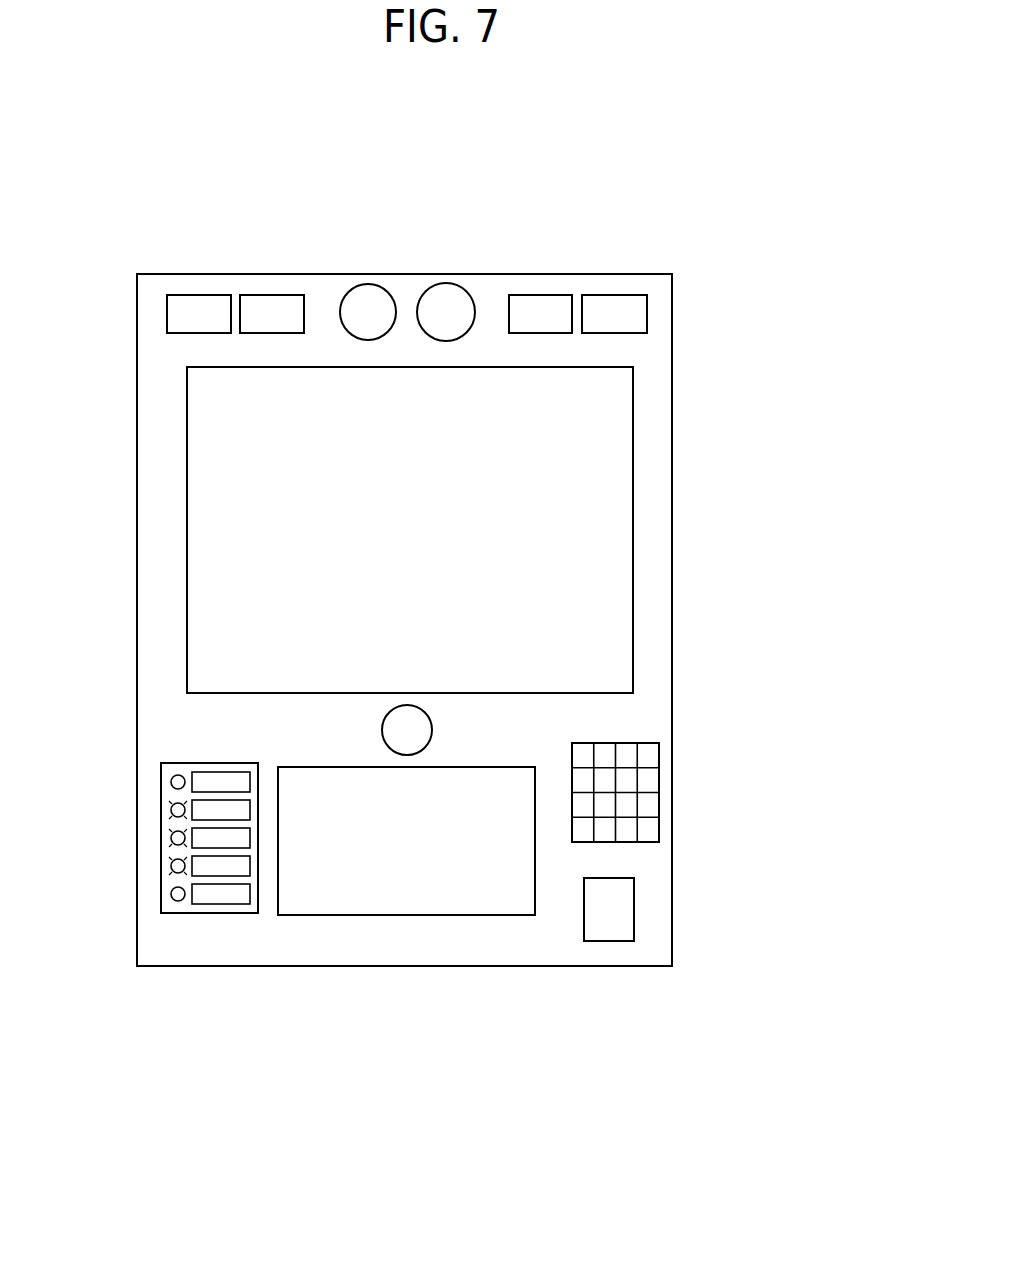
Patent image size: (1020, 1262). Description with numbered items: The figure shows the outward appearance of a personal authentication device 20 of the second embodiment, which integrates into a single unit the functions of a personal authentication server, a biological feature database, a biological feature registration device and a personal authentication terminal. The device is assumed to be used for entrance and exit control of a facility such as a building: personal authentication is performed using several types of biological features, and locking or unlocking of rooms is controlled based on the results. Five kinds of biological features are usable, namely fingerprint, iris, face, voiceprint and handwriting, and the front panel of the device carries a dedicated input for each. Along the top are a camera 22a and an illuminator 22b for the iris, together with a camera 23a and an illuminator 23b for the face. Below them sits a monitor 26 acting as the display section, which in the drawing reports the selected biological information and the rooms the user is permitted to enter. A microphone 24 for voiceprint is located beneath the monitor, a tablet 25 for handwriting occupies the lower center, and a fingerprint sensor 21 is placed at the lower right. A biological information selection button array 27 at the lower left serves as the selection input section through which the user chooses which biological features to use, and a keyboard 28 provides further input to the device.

The personal authentication device 20 is at (135, 272).
The fingerprint sensor 21 is at (634, 908).
The camera for iris 22a is at (446, 283).
The illuminator for iris 22b is at (198, 295).
The camera for face 23a is at (368, 284).
The illuminator for face 23b is at (272, 295).
The microphone for voiceprint 24 is at (432, 730).
The tablet for handwriting 25 is at (412, 915).
The monitor 26 is at (633, 517).
The biological information selection button array 27 is at (215, 923).
The keyboard 28 is at (659, 782).